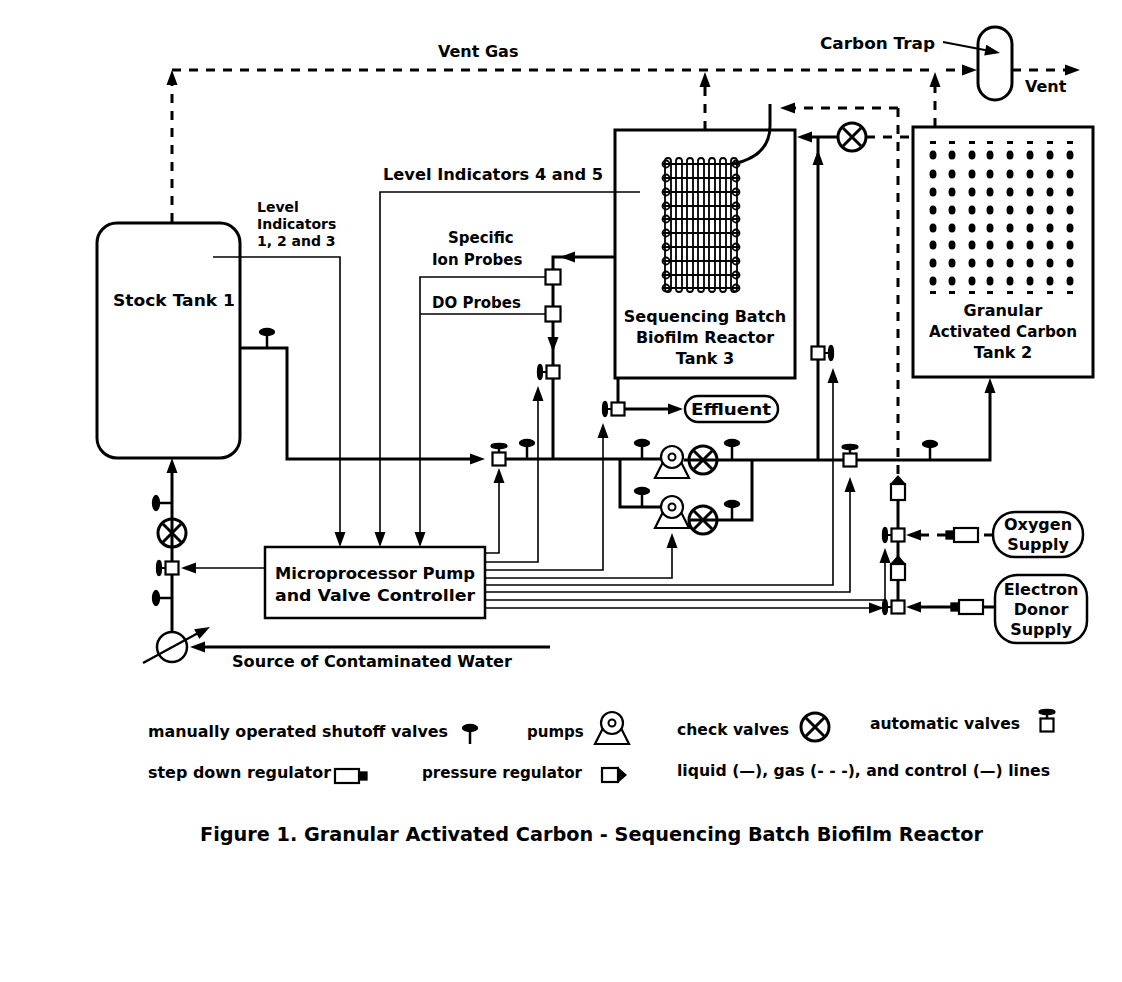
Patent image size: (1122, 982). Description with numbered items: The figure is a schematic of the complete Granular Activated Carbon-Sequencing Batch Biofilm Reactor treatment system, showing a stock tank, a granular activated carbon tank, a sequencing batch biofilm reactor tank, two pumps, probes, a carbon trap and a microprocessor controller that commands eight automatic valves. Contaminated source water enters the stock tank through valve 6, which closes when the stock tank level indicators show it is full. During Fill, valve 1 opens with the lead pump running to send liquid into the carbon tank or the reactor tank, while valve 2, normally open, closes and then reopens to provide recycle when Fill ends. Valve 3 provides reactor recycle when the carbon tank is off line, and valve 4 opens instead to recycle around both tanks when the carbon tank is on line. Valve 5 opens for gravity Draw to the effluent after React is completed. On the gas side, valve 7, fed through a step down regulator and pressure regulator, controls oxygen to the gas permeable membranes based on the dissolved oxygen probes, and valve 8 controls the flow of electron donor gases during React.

The valve 1 is at (494, 444).
The valve 2 is at (530, 374).
The valve 3 is at (837, 355).
The valve 4 is at (848, 445).
The valve 5 is at (596, 410).
The valve 6 is at (150, 569).
The valve 7 is at (877, 536).
The valve 8 is at (897, 620).